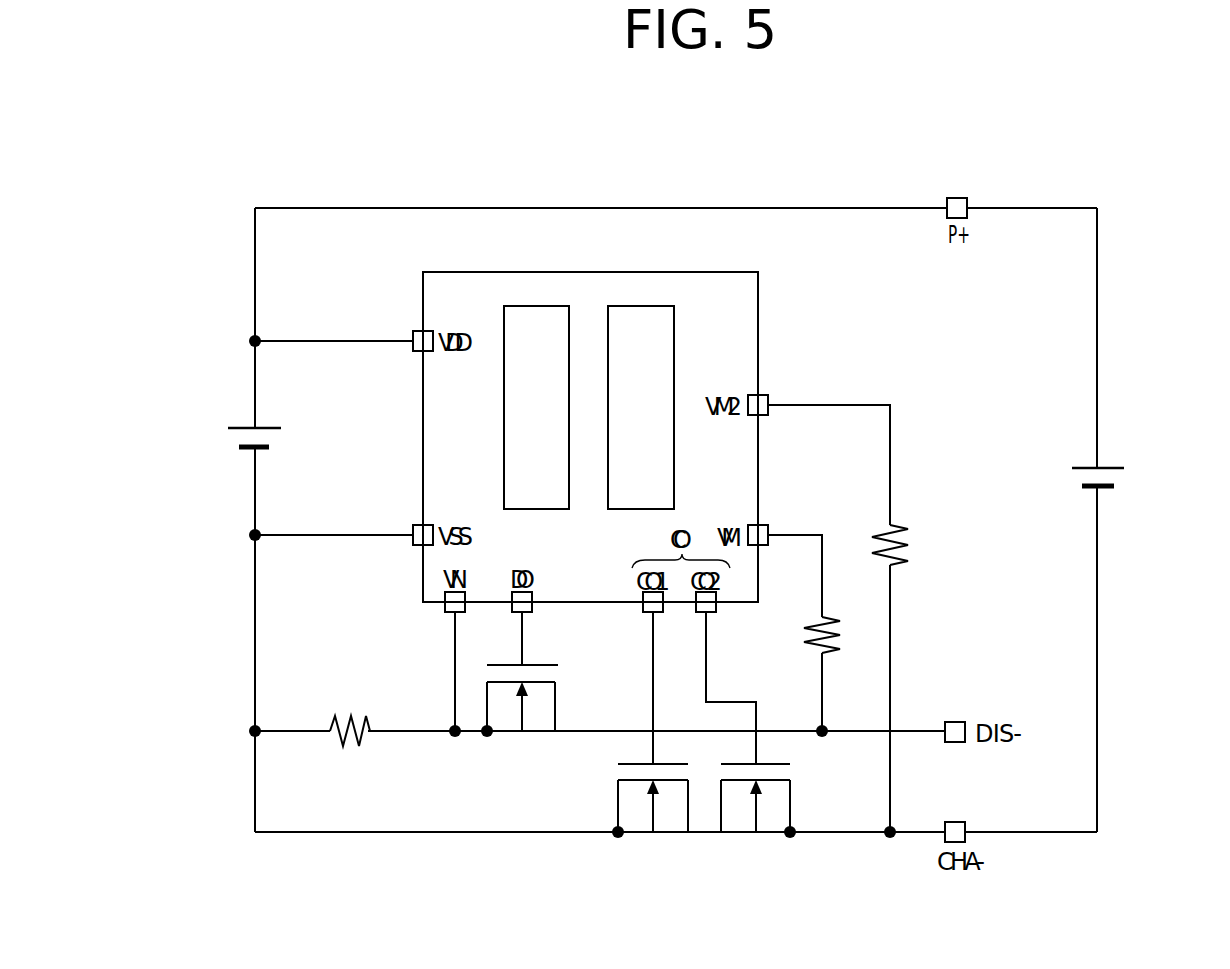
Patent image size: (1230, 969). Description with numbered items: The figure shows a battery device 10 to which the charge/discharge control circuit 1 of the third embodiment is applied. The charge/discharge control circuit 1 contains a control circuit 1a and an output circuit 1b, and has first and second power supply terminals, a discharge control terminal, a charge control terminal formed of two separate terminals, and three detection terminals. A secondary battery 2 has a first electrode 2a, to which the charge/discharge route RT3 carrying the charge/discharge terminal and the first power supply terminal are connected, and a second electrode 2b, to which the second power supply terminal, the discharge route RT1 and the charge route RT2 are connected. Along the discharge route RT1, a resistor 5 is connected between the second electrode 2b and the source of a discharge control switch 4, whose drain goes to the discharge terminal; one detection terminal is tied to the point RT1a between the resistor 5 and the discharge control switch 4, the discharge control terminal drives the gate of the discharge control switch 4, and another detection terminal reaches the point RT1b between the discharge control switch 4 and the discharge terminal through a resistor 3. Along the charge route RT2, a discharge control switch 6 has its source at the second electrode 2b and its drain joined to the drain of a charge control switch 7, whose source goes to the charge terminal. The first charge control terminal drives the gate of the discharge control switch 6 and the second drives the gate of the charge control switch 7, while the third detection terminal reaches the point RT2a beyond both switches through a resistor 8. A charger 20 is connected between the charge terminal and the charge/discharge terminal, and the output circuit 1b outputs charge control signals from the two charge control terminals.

The battery device 10 is at (667, 200).
The charge/discharge control circuit 1 is at (760, 318).
The control circuit 1a is at (504, 434).
The output circuit 1b is at (674, 445).
The secondary battery 2 is at (235, 439).
The first electrode 2a is at (271, 426).
The second electrode 2b is at (268, 450).
The resistor 3 is at (806, 638).
The discharge control switch 4 is at (558, 708).
The resistor 5 is at (351, 712).
The discharge control switch 6 is at (617, 795).
The charge control switch 7 is at (790, 798).
The resistor 8 is at (912, 545).
The charger 20 is at (1138, 475).
The discharge route RT1 is at (915, 727).
The charge route RT2 is at (915, 829).
The charge/discharge route RT3 is at (793, 207).
The point RT1a is at (457, 736).
The point RT1b is at (825, 736).
The point RT2a is at (888, 838).